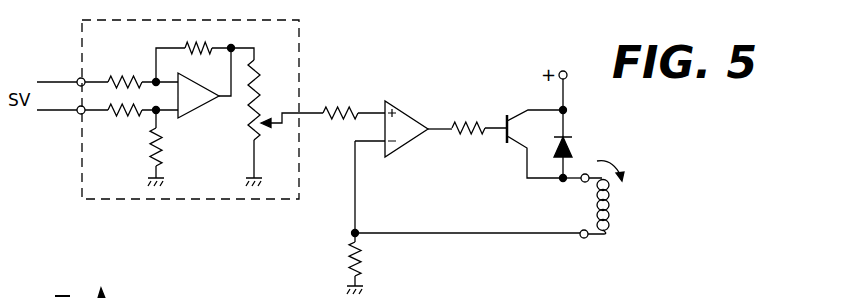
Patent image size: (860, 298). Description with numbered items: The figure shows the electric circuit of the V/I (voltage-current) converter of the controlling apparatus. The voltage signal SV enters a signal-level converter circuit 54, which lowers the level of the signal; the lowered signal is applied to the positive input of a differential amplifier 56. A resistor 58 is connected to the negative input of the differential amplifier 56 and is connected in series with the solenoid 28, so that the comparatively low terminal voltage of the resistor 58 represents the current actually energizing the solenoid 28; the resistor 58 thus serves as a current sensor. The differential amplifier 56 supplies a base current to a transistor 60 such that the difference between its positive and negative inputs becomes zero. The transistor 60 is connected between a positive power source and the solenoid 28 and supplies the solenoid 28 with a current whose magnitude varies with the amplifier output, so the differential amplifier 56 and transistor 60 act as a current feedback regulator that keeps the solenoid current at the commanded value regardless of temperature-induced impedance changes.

The signal-level converter circuit 54 is at (300, 43).
The differential amplifier 56 is at (403, 120).
The resistor 58 is at (350, 258).
The transistor 60 is at (505, 116).
The solenoid 28 is at (609, 222).